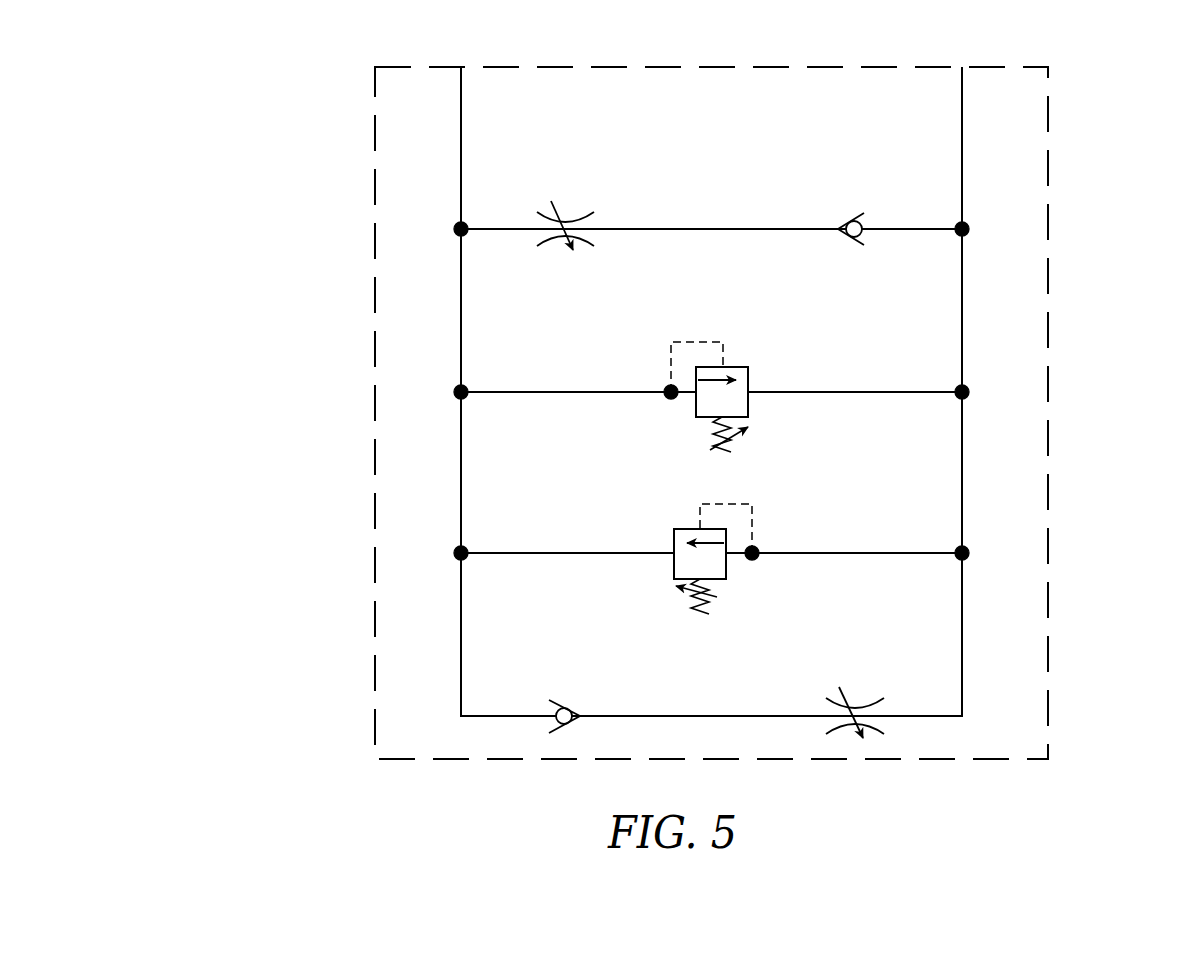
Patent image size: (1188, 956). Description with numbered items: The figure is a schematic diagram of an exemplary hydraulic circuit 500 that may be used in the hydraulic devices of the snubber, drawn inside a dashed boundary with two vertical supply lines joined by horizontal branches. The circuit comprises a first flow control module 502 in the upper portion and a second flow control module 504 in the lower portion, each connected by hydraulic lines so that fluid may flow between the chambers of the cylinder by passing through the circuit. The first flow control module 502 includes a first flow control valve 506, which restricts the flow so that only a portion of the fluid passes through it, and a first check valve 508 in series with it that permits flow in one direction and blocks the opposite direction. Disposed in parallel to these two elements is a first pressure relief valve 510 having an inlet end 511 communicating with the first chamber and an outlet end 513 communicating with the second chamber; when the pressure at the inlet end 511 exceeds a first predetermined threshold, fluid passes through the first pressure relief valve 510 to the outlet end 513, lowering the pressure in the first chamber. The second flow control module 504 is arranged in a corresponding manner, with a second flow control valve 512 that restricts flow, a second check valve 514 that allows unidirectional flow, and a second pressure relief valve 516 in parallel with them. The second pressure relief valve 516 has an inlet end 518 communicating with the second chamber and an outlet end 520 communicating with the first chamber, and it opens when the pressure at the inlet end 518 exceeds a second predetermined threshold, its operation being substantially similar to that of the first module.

The hydraulic circuit 500 is at (296, 92).
The first flow control module 502 is at (1022, 254).
The second flow control module 504 is at (1008, 604).
The first flow control valve 506 is at (571, 221).
The first check valve 508 is at (849, 220).
The first pressure relief valve 510 is at (732, 367).
The inlet end 511 is at (455, 388).
The second flow control valve 512 is at (862, 706).
The outlet end 513 is at (969, 388).
The second check valve 514 is at (571, 708).
The second pressure relief valve 516 is at (690, 529).
The inlet end 518 is at (969, 549).
The outlet end 520 is at (455, 550).